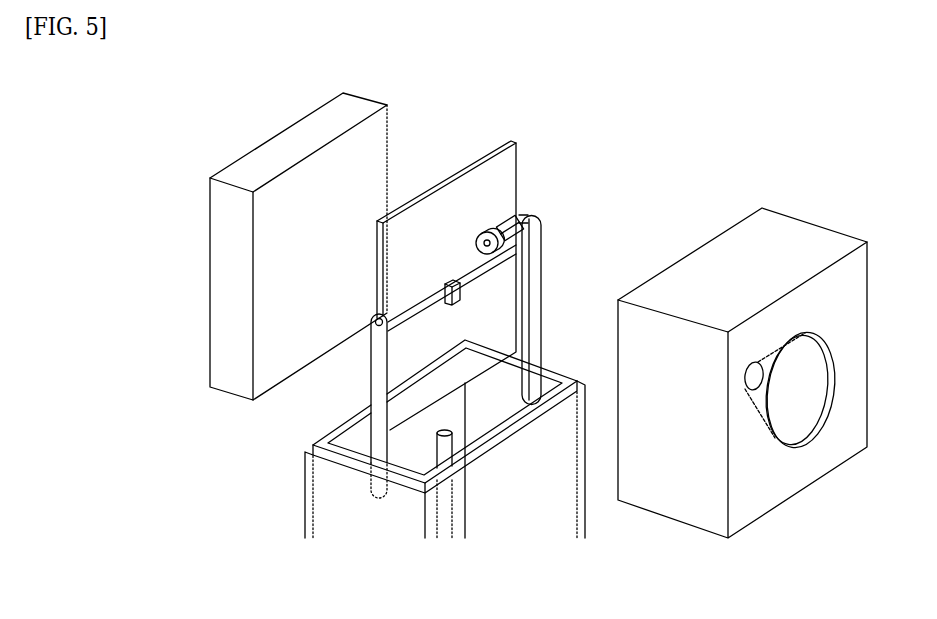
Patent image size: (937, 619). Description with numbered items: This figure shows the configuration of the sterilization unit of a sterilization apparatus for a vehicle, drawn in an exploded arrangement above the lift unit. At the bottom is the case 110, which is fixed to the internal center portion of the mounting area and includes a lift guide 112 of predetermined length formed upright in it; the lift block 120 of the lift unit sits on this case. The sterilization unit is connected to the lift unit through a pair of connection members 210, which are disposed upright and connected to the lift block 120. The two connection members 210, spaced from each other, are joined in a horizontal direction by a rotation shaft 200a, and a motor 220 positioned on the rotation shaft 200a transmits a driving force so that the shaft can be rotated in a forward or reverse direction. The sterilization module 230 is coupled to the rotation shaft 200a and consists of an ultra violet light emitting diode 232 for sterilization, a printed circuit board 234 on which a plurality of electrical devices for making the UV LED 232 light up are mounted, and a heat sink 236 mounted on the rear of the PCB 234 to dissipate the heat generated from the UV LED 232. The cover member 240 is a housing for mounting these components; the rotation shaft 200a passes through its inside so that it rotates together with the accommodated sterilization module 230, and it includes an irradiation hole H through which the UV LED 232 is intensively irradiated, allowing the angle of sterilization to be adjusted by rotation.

The case 110 is at (587, 495).
The lift guide 112 is at (447, 445).
The lift block 120 is at (550, 372).
The rotation shaft 200a is at (432, 288).
The connection members 210 is at (532, 248).
The motor 220 is at (510, 222).
The sterilization module 230 is at (293, 385).
The ultra violet light emitting diode 232 is at (462, 283).
The printed circuit board 234 is at (497, 148).
The heat sink 236 is at (209, 279).
The cover member 240 is at (785, 235).
The irradiation hole H is at (795, 418).